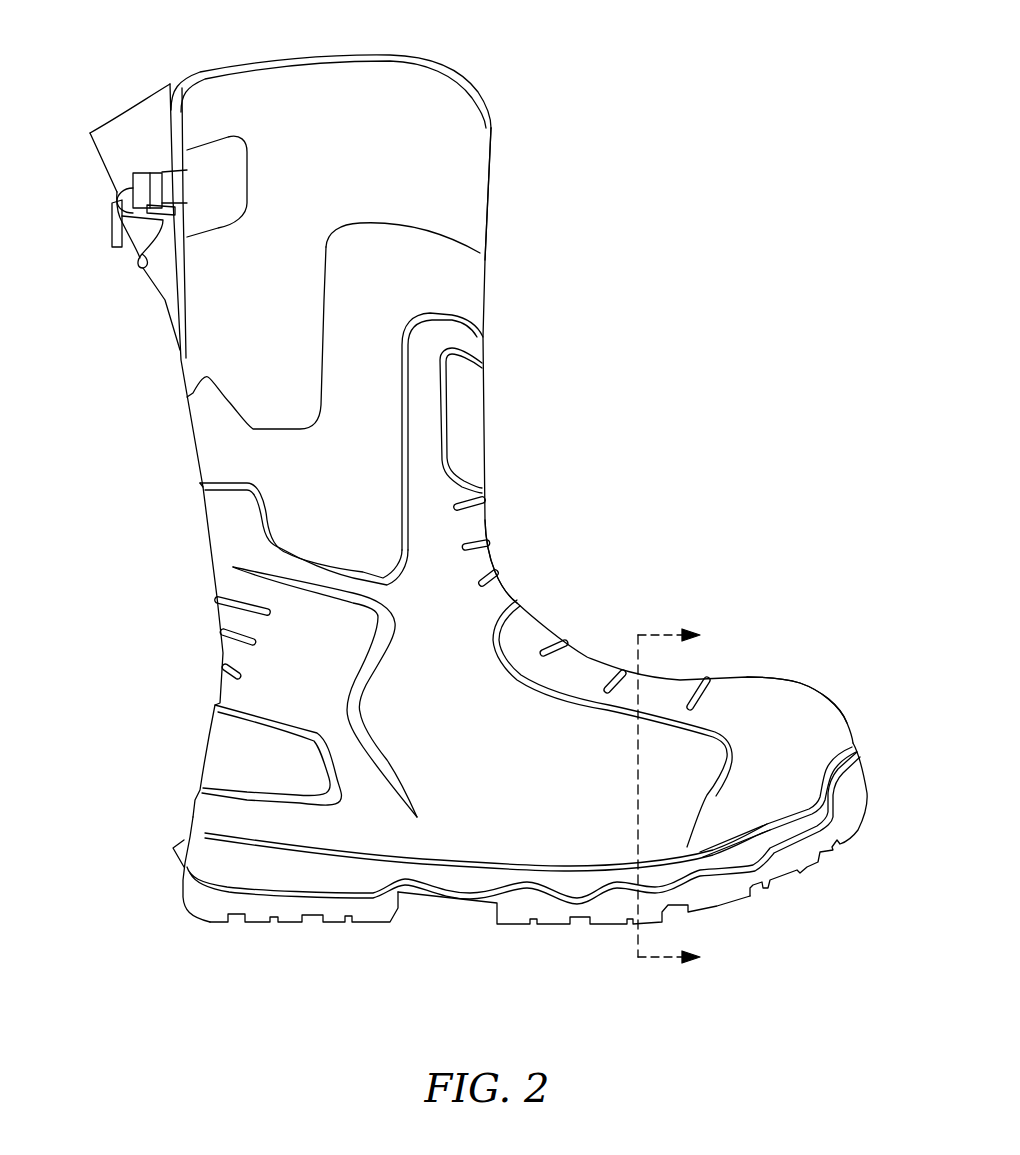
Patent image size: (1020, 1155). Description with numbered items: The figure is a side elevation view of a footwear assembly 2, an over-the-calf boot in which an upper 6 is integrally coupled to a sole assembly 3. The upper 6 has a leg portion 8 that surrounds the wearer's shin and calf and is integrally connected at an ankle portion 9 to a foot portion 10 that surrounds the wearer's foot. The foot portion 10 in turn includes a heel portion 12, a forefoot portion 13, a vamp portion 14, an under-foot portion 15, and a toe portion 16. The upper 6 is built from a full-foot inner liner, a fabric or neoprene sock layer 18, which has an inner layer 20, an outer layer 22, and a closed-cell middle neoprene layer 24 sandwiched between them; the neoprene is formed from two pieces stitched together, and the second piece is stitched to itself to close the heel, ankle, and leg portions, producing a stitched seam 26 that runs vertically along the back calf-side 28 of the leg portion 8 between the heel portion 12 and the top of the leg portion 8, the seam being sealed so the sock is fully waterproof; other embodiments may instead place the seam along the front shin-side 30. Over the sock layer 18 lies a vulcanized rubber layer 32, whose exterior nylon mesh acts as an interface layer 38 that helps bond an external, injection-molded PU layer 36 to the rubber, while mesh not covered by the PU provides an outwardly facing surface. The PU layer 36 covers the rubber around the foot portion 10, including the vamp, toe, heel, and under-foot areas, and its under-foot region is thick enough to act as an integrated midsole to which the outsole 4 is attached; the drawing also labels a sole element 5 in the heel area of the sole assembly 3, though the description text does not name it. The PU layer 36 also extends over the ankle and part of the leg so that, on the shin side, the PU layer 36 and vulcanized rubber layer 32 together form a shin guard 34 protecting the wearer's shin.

The footwear assembly 2 is at (684, 221).
The sole assembly 3 is at (128, 891).
The outsole 4 is at (260, 913).
The midsole 5 is at (355, 880).
The upper 6 is at (584, 521).
The leg portion 8 is at (553, 337).
The ankle portion 9 is at (155, 642).
The foot portion 10 is at (737, 735).
The heel portion 12 is at (202, 817).
The forefoot portion 13 is at (760, 800).
The vamp portion 14 is at (540, 647).
The under-foot portion 15 is at (464, 937).
The toe portion 16 is at (797, 688).
The sock layer 18 is at (303, 90).
The inner layer 20 is at (423, 143).
The outer layer 22 is at (420, 164).
The middle neoprene layer 24 is at (427, 180).
The stitched seam 26 is at (190, 360).
The calf-side 28 is at (153, 431).
The shin-side 30 is at (501, 308).
The vulcanized rubber layer 32 is at (330, 487).
The shin guard 34 is at (465, 417).
The PU layer 36 is at (518, 717).
The interface layer 38 is at (337, 523).